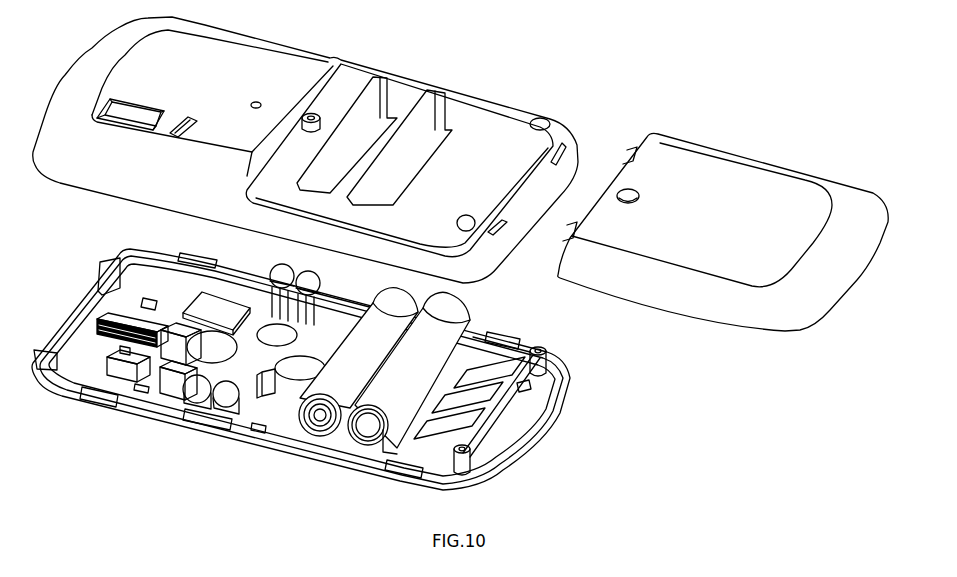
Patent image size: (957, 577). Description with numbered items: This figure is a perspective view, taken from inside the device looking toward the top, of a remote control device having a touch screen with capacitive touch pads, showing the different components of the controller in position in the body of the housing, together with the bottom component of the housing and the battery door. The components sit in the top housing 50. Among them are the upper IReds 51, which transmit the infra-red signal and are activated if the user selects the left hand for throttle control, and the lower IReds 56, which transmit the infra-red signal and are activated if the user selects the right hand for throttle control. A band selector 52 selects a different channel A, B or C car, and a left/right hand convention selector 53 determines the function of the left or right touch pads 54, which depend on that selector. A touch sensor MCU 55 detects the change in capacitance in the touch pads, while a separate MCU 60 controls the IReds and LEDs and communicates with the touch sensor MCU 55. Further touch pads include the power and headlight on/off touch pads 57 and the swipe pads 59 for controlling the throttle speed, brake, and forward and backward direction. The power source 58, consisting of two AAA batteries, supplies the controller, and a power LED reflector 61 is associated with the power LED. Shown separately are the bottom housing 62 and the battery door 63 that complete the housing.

The top housing 50 is at (48, 346).
The upper IReds 51 is at (222, 399).
The band selector 52 is at (170, 388).
The left/right hand convention selector 53 is at (120, 370).
The left or right touch pads 54 is at (212, 343).
The touch sensor MCU 55 is at (227, 306).
The lower IReds 56 is at (318, 275).
The power and headlight on/off touch pads 57 is at (298, 378).
The power source 58 is at (387, 398).
The swipe pads 59 is at (445, 452).
The MCU 60 is at (270, 334).
The power LED reflector 61 is at (343, 311).
The bottom housing 62 is at (276, 62).
The battery door 63 is at (762, 182).